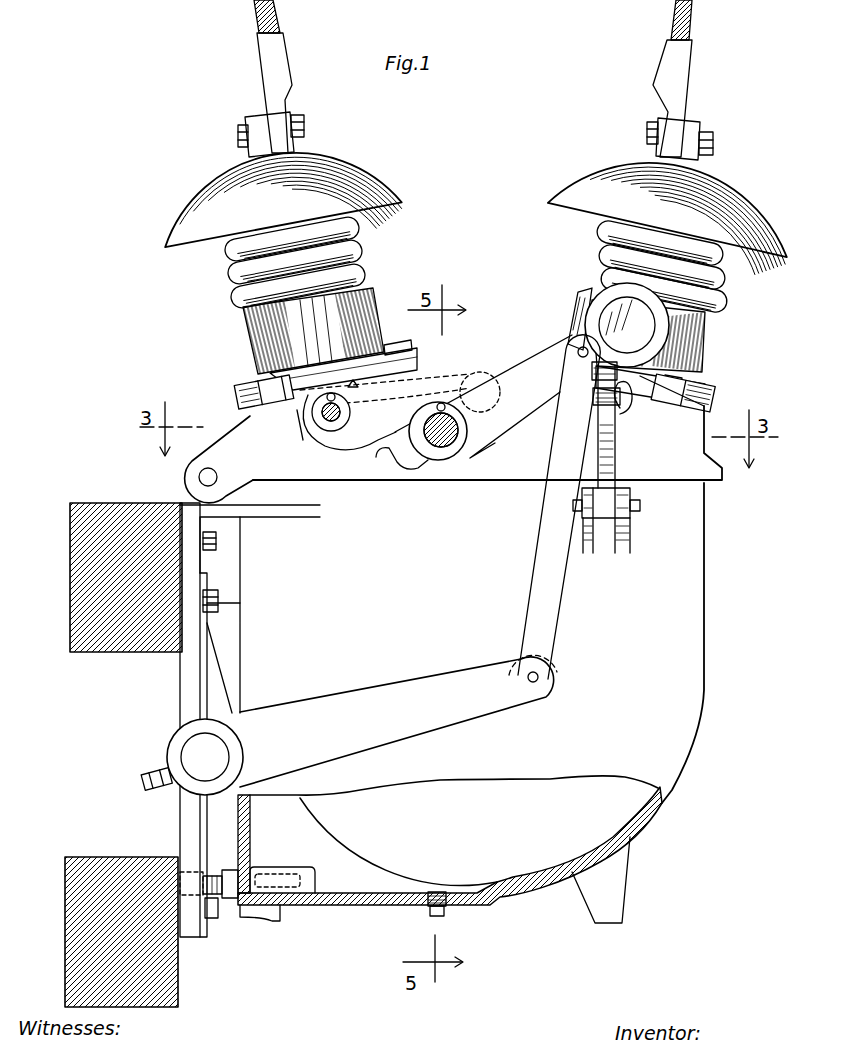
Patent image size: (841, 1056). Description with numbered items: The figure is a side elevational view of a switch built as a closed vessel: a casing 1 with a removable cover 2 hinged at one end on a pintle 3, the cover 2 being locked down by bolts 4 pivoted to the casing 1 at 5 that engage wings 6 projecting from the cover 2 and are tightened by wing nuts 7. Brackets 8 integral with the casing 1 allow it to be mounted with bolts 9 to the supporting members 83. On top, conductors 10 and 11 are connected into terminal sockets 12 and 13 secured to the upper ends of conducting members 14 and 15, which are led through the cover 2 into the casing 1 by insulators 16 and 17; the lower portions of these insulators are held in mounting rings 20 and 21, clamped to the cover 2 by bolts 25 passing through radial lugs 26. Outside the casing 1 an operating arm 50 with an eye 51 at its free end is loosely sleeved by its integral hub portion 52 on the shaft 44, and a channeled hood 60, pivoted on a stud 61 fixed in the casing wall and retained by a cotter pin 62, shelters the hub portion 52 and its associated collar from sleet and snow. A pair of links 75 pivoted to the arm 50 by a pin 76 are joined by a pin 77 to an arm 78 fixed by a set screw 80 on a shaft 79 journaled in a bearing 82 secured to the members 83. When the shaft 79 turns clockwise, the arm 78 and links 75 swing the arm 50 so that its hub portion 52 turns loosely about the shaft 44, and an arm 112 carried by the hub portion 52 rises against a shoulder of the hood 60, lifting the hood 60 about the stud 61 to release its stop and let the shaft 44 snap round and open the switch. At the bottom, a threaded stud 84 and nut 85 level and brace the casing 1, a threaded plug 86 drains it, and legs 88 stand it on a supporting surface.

The casing 1 is at (650, 810).
The cover 2 is at (683, 478).
The pintle 3 is at (192, 478).
The bolts 4 is at (598, 465).
The pivot 5 is at (615, 488).
The wings 6 is at (598, 427).
The wing nuts 7 is at (580, 362).
The brackets 8 is at (178, 503).
The bolts 9 is at (215, 545).
The conductor 10 is at (258, 10).
The conductor 11 is at (690, 18).
The terminal socket 12 is at (272, 72).
The terminal socket 13 is at (680, 90).
The conducting member 14 is at (258, 132).
The conducting member 15 is at (688, 143).
The insulator 16 is at (222, 274).
The insulator 17 is at (590, 272).
The mounting ring 20 is at (262, 345).
The mounting ring 21 is at (690, 340).
The bolts 25 is at (273, 370).
The lugs 26 is at (712, 396).
The shaft 44 is at (434, 448).
The operating arm 50 is at (515, 380).
The eye 51 is at (598, 320).
The hub portion 52 is at (455, 455).
The channeled hood 60 is at (356, 438).
The stud 61 is at (322, 424).
The cotter pin 62 is at (323, 410).
The links 75 is at (570, 590).
The pin 76 is at (620, 405).
The pin 77 is at (540, 677).
The arm 78 is at (425, 712).
The shaft 79 is at (205, 757).
The set screw 80 is at (150, 782).
The bearing 82 is at (196, 697).
The members 83 is at (105, 640).
The threaded stud 84 is at (218, 900).
The nut 85 is at (248, 876).
The threaded plug 86 is at (445, 912).
The legs 88 is at (268, 920).
The arm 112 is at (386, 462).